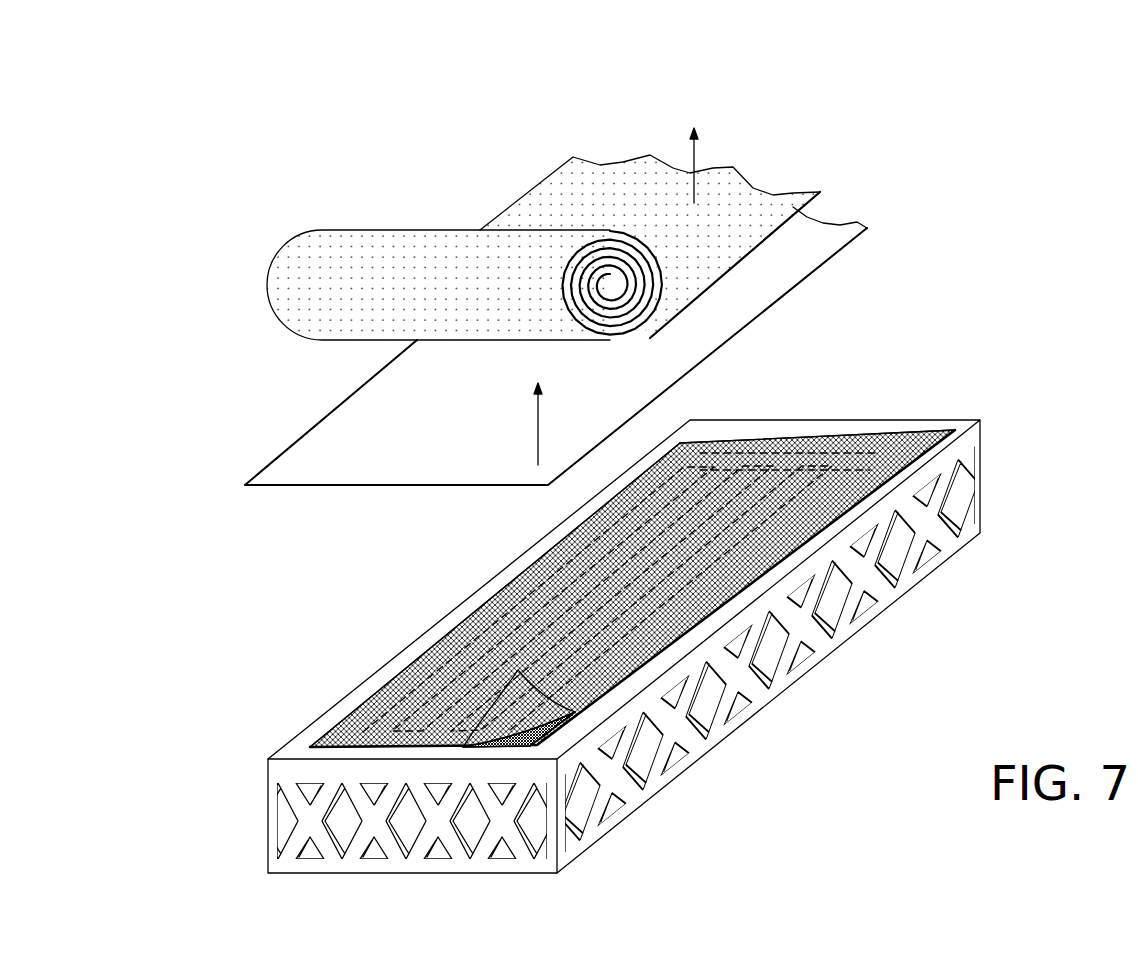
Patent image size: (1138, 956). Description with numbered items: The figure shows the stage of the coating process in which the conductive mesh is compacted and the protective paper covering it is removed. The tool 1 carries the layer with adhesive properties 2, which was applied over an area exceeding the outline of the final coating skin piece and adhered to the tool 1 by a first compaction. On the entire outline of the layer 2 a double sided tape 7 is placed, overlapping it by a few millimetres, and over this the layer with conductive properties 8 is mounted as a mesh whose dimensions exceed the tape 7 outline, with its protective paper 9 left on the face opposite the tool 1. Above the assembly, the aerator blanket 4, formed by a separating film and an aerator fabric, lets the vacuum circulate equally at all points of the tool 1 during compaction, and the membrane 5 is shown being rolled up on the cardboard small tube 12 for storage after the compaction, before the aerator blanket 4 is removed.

The tool 1 is at (792, 675).
The layer with adhesive properties 2 is at (847, 463).
The aerator blanket 4 is at (755, 193).
The membrane 5 is at (803, 248).
The double sided tape 7 is at (513, 613).
The layer with conductive properties 8 is at (550, 737).
The protective paper 9 is at (513, 692).
The cardboard small tube 12 is at (620, 282).